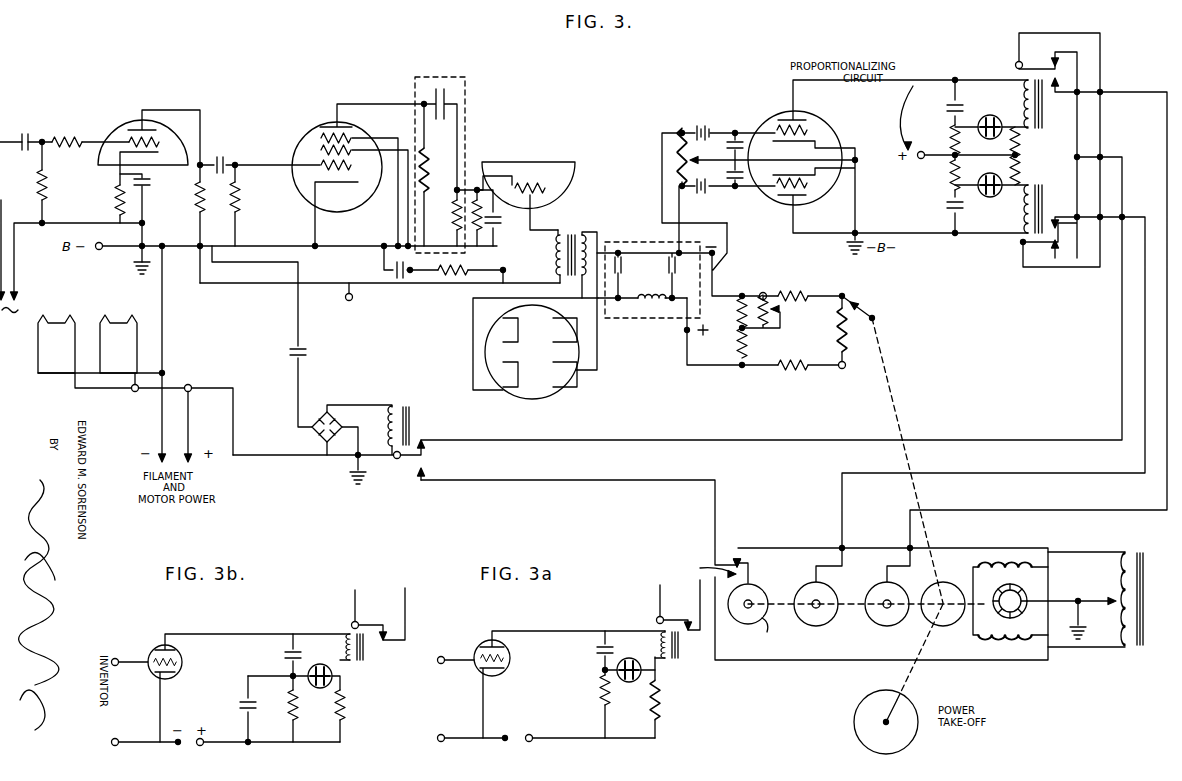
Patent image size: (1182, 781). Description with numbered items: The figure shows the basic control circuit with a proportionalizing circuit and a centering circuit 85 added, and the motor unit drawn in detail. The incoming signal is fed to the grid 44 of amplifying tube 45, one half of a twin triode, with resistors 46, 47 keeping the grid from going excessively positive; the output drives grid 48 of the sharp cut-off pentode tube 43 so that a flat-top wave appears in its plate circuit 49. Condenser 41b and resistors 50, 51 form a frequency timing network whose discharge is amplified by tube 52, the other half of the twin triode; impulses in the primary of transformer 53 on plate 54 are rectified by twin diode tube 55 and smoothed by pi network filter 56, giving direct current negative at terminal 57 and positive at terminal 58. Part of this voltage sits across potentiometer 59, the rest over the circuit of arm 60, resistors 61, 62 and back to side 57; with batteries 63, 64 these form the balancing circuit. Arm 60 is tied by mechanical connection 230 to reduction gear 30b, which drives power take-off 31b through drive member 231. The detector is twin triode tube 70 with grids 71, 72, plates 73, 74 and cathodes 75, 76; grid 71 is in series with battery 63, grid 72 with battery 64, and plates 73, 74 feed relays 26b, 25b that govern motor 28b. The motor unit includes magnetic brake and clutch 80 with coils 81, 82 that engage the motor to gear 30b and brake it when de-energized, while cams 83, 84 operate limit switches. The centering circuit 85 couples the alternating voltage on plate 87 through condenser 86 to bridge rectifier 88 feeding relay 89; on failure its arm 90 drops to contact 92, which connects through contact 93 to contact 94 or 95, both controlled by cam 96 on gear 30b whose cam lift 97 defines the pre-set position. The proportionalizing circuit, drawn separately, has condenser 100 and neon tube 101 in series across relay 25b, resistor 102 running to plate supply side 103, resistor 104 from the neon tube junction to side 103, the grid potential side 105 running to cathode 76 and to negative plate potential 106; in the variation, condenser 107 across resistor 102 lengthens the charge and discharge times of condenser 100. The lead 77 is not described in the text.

In FIG. 3, the condenser 41b is at (450, 100).
In FIG. 3, the pentode tube 43 is at (320, 138).
In FIG. 3, the grid 44 is at (125, 152).
In FIG. 3, the amplifying tube 45 is at (135, 138).
In FIG. 3, the resistor 46 is at (66, 138).
In FIG. 3, the resistor 47 is at (38, 176).
In FIG. 3, the grid 48 is at (322, 166).
In FIG. 3, the plate circuit 49 is at (330, 126).
In FIG. 3, the resistor 50 is at (427, 160).
In FIG. 3, the resistor 51 is at (452, 217).
In FIG. 3, the amplifying tube 52 is at (530, 154).
In FIG. 3, the transformer 53 is at (585, 233).
In FIG. 3, the plate 54 is at (542, 204).
In FIG. 3, the twin diode tube 55 is at (485, 338).
In FIG. 3, the pi network filter 56 is at (626, 242).
In FIG. 3, the negative terminal 57 is at (722, 266).
In FIG. 3, the positive terminal 58 is at (684, 333).
In FIG. 3, the potentiometer 59 is at (818, 367).
In FIG. 3, the potentiometer arm 60 is at (876, 314).
In FIG. 3, the resistor 61 is at (677, 142).
In FIG. 3, the resistor 62 is at (677, 172).
In FIG. 3, the battery 63 is at (702, 190).
In FIG. 3, the battery 64 is at (700, 120).
In FIG. 3, the twin triode tube 70 is at (826, 118).
In FIG. 3A, the twin triode tube 70 is at (506, 654).
In FIG. 3, the grid 71 is at (775, 186).
In FIG. 3, the grid 72 is at (775, 128).
In FIG. 3A, the grid 72 is at (446, 656).
In FIG. 3, the plate 73 is at (800, 197).
In FIG. 3, the plate 74 is at (798, 118).
In FIG. 3A, the plate 74 is at (488, 645).
In FIG. 3, the cathode 75 is at (830, 172).
In FIG. 3, the cathode 76 is at (830, 146).
In FIG. 3A, the cathode 76 is at (490, 670).
In FIG. 3, the lead 77 is at (688, 160).
In FIG. 3, the relay 25b is at (1062, 92).
In FIG. 3A, the relay 25b is at (668, 660).
In FIG. 3B, the relay 25b is at (372, 656).
In FIG. 3, the relay 26b is at (1066, 178).
In FIG. 3, the magnetic brake and clutch 80 is at (1142, 578).
In FIG. 3, the coil 81 is at (1071, 590).
In FIG. 3, the coil 82 is at (1095, 606).
In FIG. 3, the cam 83 is at (886, 626).
In FIG. 3, the cam 84 is at (816, 626).
In FIG. 3, the centering circuit 85 is at (520, 481).
In FIG. 3, the condenser 86 is at (302, 350).
In FIG. 3, the plate 87 is at (148, 128).
In FIG. 3, the bridge rectifier 88 is at (310, 430).
In FIG. 3, the relay 89 is at (398, 405).
In FIG. 3, the relay arm 90 is at (397, 460).
In FIG. 3, the contact 92 is at (418, 480).
In FIG. 3, the contact 93 is at (752, 566).
In FIG. 3, the contact 94 is at (735, 574).
In FIG. 3, the contact 95 is at (736, 562).
In FIG. 3, the cam 96 is at (740, 624).
In FIG. 3, the cam lift 97 is at (774, 631).
In FIG. 3, the motor 28b is at (1022, 600).
In FIG. 3, the reduction gear 30b is at (946, 582).
In FIG. 3, the power take-off 31b is at (853, 707).
In FIG. 3, the mechanical connection 230 is at (890, 368).
In FIG. 3, the mechanical drive member 231 is at (918, 690).
In FIG. 3A, the condenser 100 is at (596, 654).
In FIG. 3B, the condenser 100 is at (285, 655).
In FIG. 3A, the neon tube 101 is at (626, 683).
In FIG. 3A, the resistor 102 is at (600, 692).
In FIG. 3B, the resistor 102 is at (289, 714).
In FIG. 3A, the plate supply terminal 103 is at (531, 742).
In FIG. 3A, the resistor 104 is at (660, 698).
In FIG. 3A, the grid potential terminal 105 is at (442, 748).
In FIG. 3A, the negative plate potential terminal 106 is at (503, 741).
In FIG. 3B, the condenser 107 is at (240, 706).